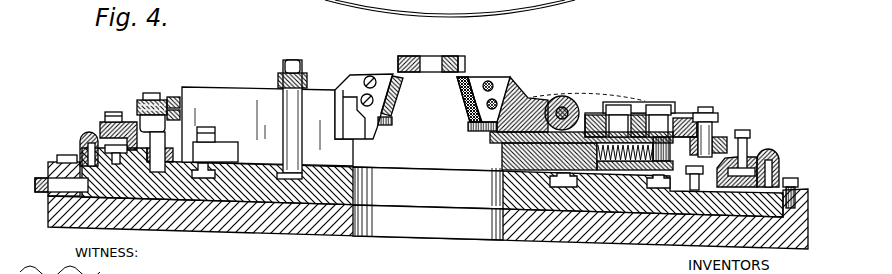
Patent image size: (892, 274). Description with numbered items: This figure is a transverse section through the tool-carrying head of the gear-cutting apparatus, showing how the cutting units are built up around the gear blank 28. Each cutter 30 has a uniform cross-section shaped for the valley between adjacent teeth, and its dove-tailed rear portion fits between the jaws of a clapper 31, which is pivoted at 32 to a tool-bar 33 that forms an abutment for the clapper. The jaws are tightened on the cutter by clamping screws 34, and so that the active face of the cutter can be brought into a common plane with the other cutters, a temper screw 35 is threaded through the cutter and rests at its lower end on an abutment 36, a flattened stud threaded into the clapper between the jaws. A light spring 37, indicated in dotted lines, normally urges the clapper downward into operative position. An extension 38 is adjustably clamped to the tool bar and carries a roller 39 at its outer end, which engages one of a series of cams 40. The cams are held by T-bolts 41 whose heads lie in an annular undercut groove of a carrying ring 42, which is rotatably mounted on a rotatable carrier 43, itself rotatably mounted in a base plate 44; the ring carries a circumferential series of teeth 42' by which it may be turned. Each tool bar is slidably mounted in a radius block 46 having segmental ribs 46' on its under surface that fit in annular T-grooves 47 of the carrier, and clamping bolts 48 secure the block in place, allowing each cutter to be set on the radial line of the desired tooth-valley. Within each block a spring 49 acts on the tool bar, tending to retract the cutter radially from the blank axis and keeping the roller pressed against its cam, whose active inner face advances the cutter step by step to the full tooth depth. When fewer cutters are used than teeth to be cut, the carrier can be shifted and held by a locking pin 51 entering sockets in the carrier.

The blank 28 is at (413, 56).
The cutter 30 is at (392, 77).
The clapper 31 is at (351, 76).
The pivot 32 is at (562, 114).
The tool-bar 33 is at (590, 116).
The clamping screws 34 is at (368, 77).
The temper screw 35 is at (466, 104).
The abutment 36 is at (480, 130).
The light spring 37 is at (546, 96).
The extension 38 is at (137, 107).
The roller 39 is at (147, 124).
The cam 40 is at (104, 121).
The T-bolts 41 is at (752, 142).
The carrying ring 42 is at (431, 162).
The teeth 42' is at (786, 158).
The rotatable carrier 43 is at (674, 206).
The base plate 44 is at (630, 214).
The radius block 46 is at (428, 188).
The segmental ribs 46' is at (428, 222).
The annular T-grooves 47 is at (294, 180).
The clamping bolts 48 is at (294, 60).
The spring 49 is at (624, 162).
The locking pin 51 is at (63, 193).